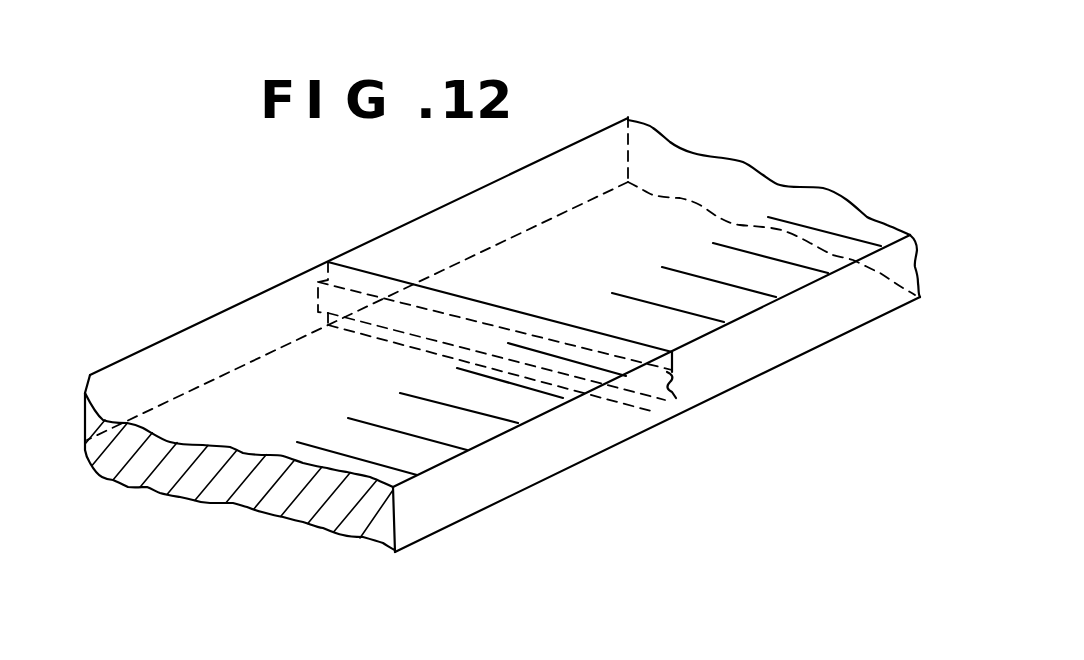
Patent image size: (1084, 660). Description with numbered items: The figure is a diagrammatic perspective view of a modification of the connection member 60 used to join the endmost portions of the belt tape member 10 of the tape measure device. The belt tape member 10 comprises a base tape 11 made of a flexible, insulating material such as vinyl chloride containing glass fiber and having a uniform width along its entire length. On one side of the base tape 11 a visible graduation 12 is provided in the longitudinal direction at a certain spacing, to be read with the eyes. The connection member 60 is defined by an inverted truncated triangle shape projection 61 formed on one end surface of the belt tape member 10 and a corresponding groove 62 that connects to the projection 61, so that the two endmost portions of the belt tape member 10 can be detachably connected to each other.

The belt tape member 10 is at (826, 331).
The base tape 11 is at (215, 338).
The visible graduation 12 is at (413, 398).
The connection member 60 is at (748, 448).
The inverted truncated triangle shape projection 61 is at (670, 380).
The groove 62 is at (670, 385).